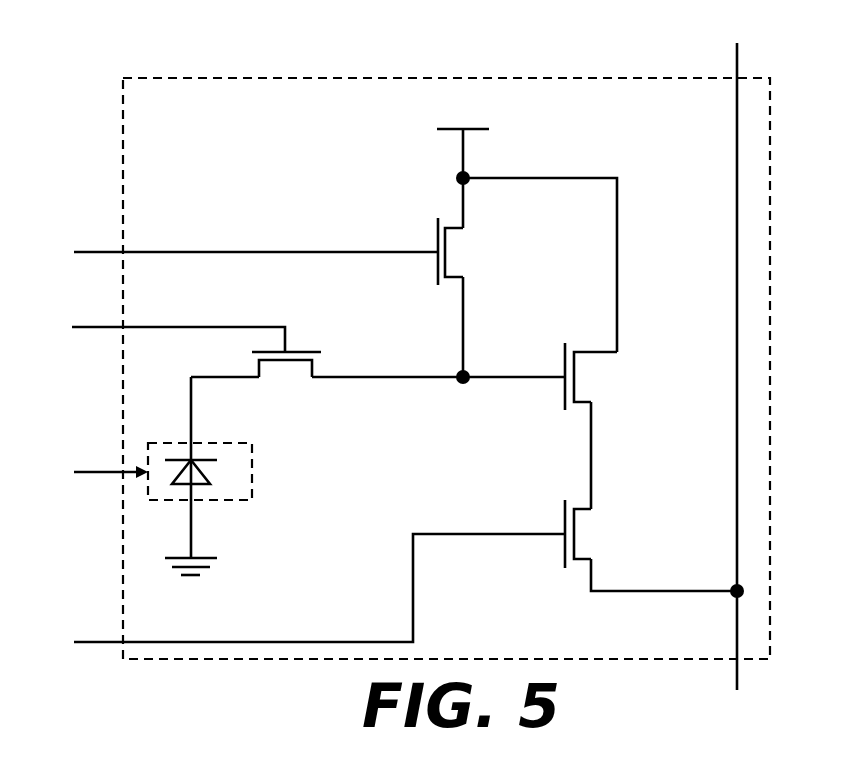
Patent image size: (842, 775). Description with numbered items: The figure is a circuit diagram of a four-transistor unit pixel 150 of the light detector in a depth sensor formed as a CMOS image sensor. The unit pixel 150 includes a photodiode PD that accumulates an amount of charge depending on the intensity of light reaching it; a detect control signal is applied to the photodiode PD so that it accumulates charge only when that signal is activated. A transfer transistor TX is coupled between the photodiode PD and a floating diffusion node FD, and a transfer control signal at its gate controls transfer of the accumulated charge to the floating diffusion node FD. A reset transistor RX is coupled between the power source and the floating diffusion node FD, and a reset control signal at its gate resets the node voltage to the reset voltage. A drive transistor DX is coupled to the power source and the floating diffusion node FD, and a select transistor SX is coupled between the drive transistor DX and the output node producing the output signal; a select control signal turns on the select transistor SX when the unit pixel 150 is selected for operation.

The unit pixel 150 is at (584, 76).
The reset transistor RX is at (460, 251).
The transfer transistor TX is at (286, 374).
The drive transistor DX is at (591, 376).
The select transistor SX is at (587, 534).
The floating diffusion node FD is at (438, 390).
The photodiode PD is at (200, 471).